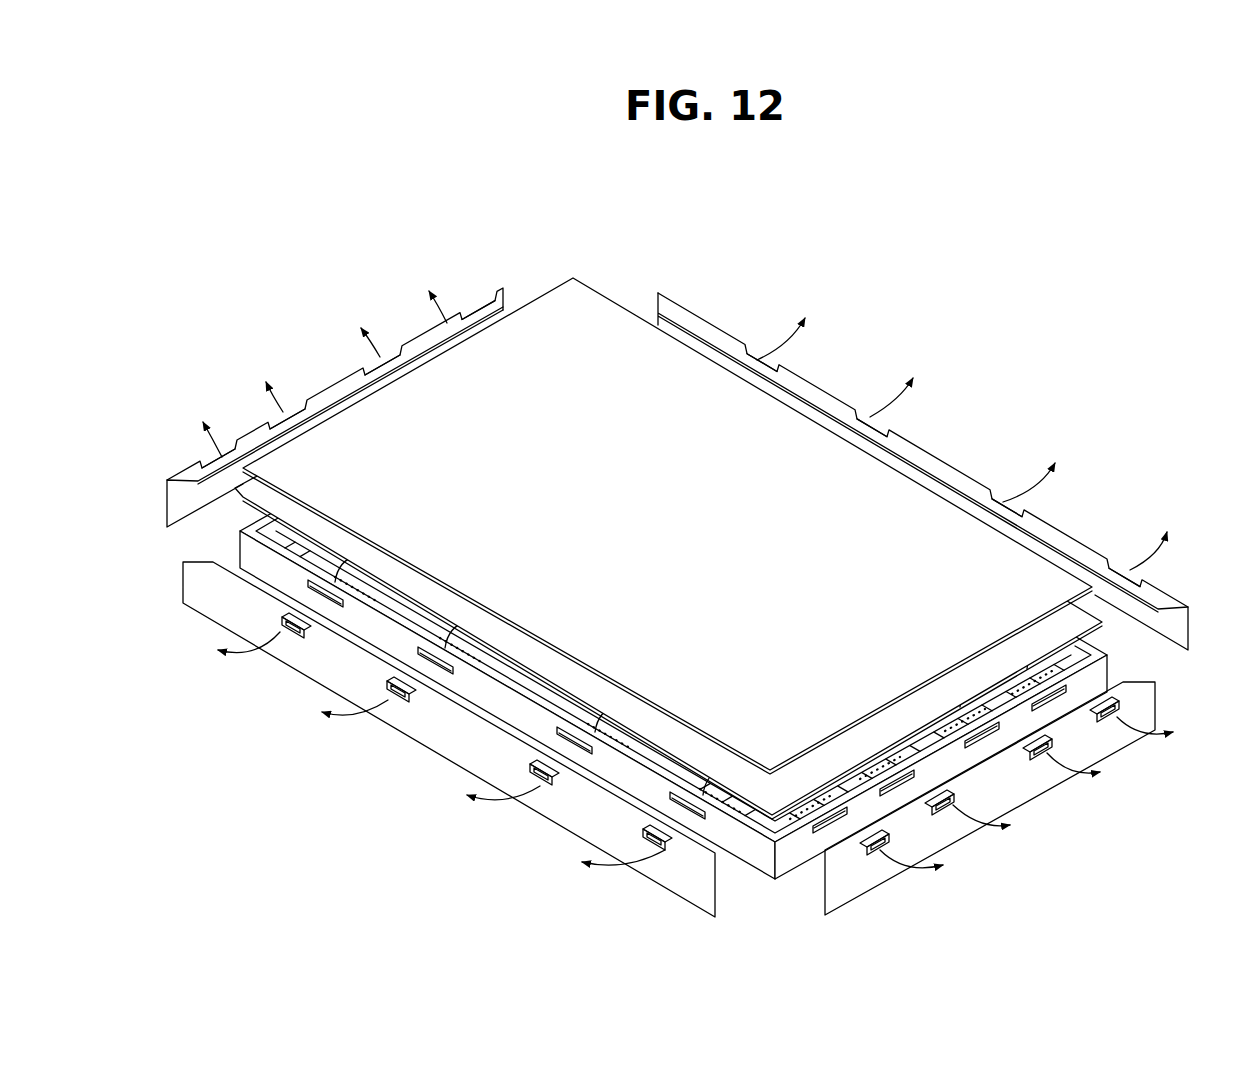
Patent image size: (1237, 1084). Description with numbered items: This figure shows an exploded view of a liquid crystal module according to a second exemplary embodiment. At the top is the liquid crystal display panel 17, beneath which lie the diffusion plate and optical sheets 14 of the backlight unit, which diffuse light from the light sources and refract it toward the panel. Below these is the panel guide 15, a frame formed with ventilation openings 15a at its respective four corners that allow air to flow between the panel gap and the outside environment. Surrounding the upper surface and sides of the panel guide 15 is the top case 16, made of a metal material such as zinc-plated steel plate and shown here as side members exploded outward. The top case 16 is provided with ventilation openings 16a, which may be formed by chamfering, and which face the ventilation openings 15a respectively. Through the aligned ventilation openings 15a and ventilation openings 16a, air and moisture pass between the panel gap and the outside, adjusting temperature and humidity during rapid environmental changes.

The diffusion plate and optical sheets 14 is at (1078, 615).
The panel guide 15 is at (957, 757).
The ventilation openings 15a is at (573, 740).
The top case 16 is at (413, 342).
The ventilation openings 16a is at (288, 410).
The liquid crystal display panel 17 is at (1038, 572).